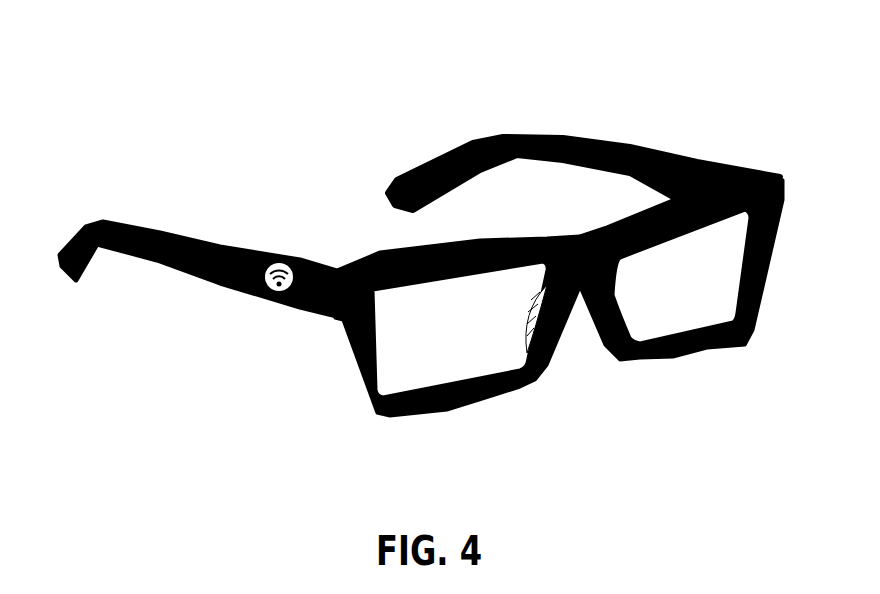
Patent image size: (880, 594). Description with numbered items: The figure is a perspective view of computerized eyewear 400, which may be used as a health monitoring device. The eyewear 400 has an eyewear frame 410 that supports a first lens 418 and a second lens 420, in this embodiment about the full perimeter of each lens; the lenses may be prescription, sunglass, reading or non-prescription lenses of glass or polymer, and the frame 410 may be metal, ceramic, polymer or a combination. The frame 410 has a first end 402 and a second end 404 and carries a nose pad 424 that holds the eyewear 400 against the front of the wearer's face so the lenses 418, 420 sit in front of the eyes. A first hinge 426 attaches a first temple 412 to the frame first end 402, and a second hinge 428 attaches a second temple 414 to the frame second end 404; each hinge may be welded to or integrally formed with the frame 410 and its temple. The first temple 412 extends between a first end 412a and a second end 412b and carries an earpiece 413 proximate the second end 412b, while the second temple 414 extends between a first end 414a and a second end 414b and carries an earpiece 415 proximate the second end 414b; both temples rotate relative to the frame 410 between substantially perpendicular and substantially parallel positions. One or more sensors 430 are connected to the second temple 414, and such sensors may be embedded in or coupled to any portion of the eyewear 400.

The eyewear 400 is at (582, 62).
The first end 402 is at (763, 159).
The second end 404 is at (326, 335).
The eyewear frame 410 is at (566, 218).
The first temple 412 is at (622, 147).
The first temple first end 412a is at (727, 165).
The first temple second end 412b is at (396, 183).
The earpiece 413 is at (497, 137).
The second temple 414 is at (222, 248).
The second temple first end 414a is at (291, 262).
The second temple second end 414b is at (80, 233).
The earpiece 415 is at (157, 233).
The first lens 418 is at (692, 313).
The second lens 420 is at (472, 352).
The second nose pad 424 is at (555, 327).
The first hinge 426 is at (772, 180).
The second hinge 428 is at (337, 270).
The sensors 430 is at (272, 293).